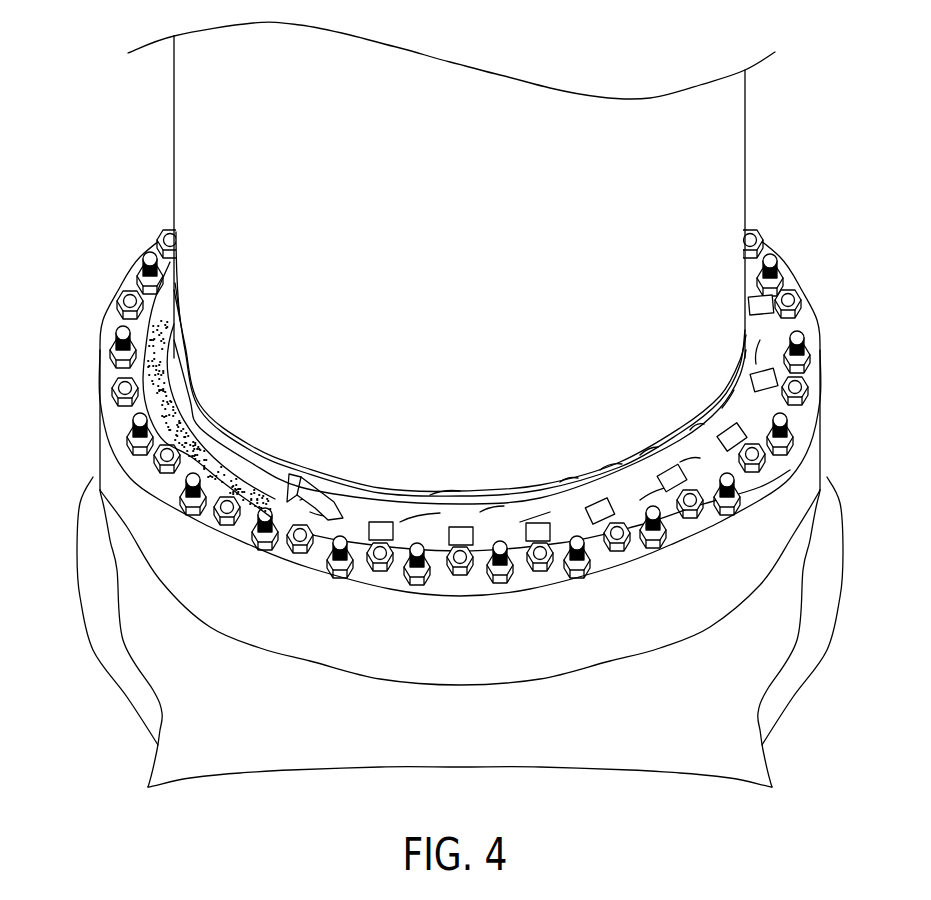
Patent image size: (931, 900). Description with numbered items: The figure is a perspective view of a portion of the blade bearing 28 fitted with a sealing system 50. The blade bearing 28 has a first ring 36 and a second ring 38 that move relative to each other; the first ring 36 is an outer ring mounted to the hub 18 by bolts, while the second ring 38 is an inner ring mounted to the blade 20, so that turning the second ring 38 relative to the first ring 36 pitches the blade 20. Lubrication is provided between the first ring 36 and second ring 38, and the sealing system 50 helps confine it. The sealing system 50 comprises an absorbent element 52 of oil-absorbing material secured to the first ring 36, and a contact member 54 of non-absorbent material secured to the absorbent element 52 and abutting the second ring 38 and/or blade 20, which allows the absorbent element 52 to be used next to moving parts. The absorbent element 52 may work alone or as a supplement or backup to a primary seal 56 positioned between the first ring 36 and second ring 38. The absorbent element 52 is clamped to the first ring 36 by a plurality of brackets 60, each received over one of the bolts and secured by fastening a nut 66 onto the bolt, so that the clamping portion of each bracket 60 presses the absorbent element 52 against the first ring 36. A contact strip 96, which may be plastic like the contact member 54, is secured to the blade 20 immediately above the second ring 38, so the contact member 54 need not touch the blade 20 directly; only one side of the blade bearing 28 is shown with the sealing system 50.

The hub 18 is at (185, 703).
The blade 20 is at (697, 101).
The blade bearing 28 is at (97, 474).
The first ring 36 is at (110, 453).
The second ring 38 is at (173, 337).
The sealing system 50 is at (373, 460).
The absorbent element 52 is at (428, 533).
The contact member 54 is at (289, 480).
The primary seal 56 is at (157, 353).
The bracket 60 is at (360, 535).
The nut 66 is at (300, 543).
The contact strip 96 is at (223, 431).